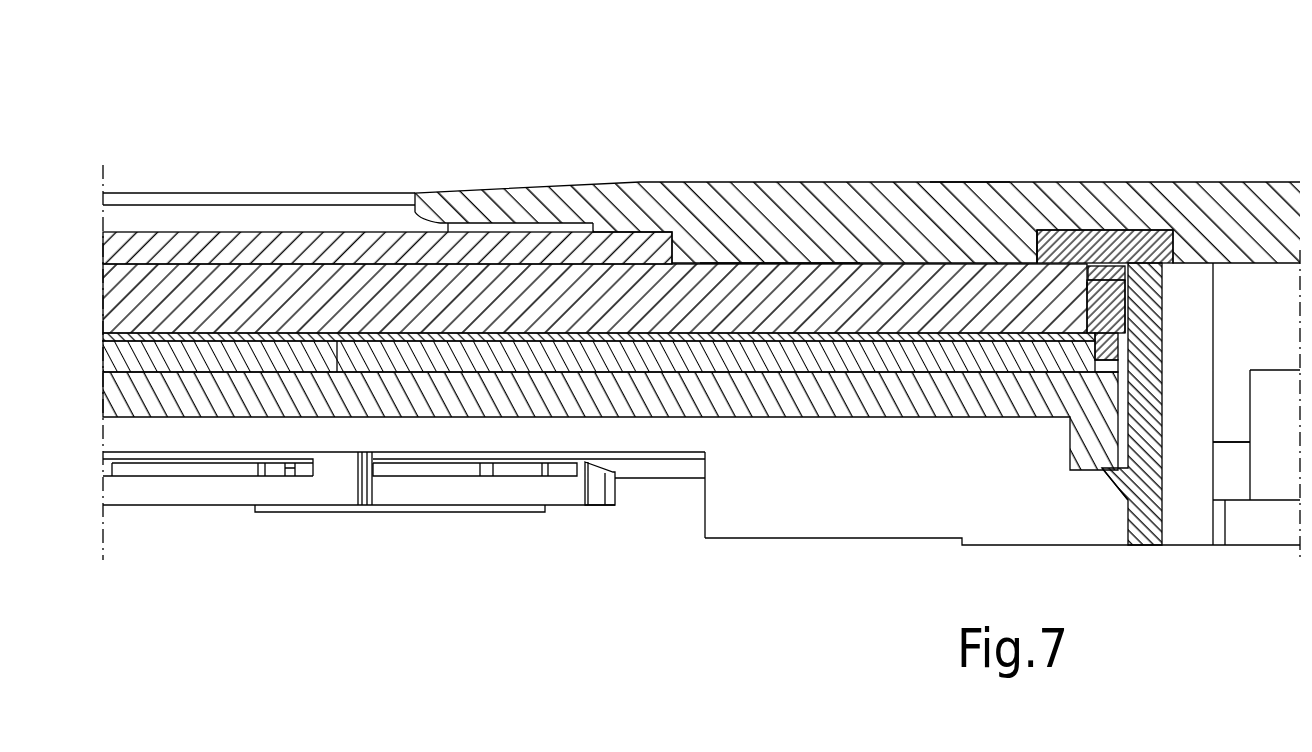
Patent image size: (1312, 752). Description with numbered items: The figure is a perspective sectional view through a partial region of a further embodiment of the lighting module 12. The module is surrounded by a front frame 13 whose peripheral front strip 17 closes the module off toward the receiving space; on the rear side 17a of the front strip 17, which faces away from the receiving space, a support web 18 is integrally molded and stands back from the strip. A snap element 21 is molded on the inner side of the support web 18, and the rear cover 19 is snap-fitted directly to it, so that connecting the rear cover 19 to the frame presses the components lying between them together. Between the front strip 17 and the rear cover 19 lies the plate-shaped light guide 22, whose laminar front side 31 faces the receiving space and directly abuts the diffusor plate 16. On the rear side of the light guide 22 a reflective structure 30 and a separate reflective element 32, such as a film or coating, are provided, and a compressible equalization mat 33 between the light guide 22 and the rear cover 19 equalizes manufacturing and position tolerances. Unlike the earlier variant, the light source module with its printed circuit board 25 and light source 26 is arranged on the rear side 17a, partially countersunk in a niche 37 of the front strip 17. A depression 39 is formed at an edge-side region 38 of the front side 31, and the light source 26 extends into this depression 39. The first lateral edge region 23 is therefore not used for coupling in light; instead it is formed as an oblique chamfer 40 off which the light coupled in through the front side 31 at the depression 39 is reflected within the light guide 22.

The lighting module 12 is at (638, 160).
The front frame 13 is at (1210, 163).
The diffusor plate 16 is at (275, 247).
The front strip 17 is at (857, 172).
The rear side of the front strip 17a is at (967, 262).
The support web 18 is at (1143, 527).
The rear cover 19 is at (438, 420).
The snap element 21 is at (1106, 478).
The plate-shaped light guide 22 is at (470, 303).
The first lateral edge region 23 is at (1132, 316).
The printed circuit board 25 is at (1157, 247).
The light source 26 is at (1110, 266).
The reflective structure 30 is at (337, 344).
The front side 31 is at (782, 262).
The reflective element 32 is at (580, 336).
The compressible equalization mat 33 is at (617, 358).
The niche 37 is at (1110, 278).
The edge-side region 38 is at (1008, 260).
The depression 39 is at (1078, 293).
The chamfer 40 is at (1127, 320).